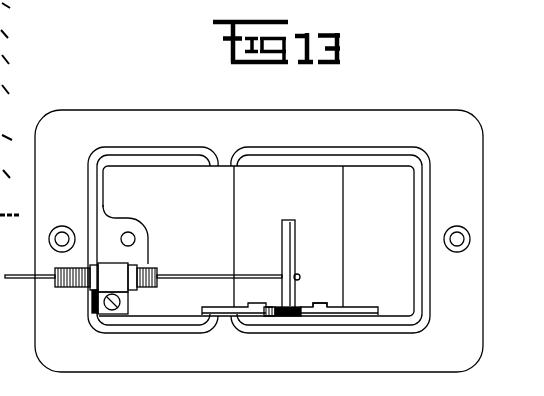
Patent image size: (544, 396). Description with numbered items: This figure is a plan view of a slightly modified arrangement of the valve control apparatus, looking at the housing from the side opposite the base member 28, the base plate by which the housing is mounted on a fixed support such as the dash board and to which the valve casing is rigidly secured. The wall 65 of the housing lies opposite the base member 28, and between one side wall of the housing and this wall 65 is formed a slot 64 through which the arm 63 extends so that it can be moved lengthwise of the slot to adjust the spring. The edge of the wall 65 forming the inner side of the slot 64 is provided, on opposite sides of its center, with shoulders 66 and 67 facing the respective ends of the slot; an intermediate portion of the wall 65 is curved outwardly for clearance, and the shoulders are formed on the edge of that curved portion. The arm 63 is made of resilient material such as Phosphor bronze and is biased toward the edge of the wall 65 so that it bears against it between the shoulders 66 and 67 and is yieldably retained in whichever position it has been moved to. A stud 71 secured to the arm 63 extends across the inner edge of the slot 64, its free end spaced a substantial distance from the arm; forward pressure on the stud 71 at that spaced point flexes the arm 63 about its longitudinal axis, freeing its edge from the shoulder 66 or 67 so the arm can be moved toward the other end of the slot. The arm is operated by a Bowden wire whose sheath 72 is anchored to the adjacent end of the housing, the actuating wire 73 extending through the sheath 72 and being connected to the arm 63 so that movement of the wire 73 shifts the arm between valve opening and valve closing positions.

The base member 28 is at (353, 118).
The arm 63 is at (272, 318).
The slot 64 is at (352, 310).
The wall 65 is at (385, 243).
The shoulder 66 is at (273, 306).
The shoulder 67 is at (328, 297).
The stud 71 is at (288, 248).
The sheath 72 is at (72, 270).
The wire 73 is at (179, 277).